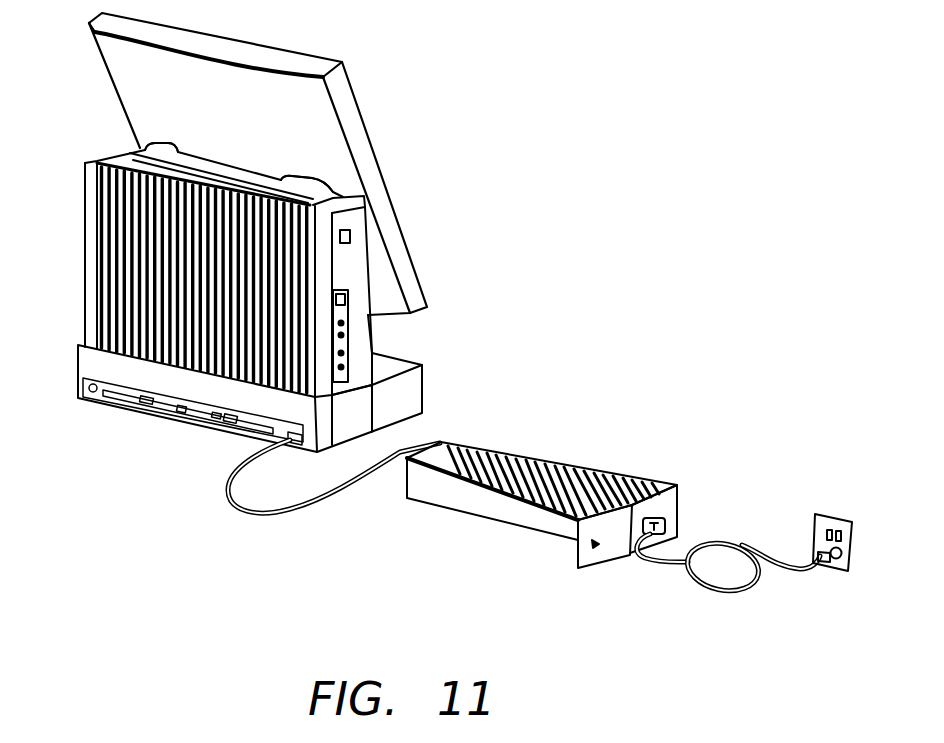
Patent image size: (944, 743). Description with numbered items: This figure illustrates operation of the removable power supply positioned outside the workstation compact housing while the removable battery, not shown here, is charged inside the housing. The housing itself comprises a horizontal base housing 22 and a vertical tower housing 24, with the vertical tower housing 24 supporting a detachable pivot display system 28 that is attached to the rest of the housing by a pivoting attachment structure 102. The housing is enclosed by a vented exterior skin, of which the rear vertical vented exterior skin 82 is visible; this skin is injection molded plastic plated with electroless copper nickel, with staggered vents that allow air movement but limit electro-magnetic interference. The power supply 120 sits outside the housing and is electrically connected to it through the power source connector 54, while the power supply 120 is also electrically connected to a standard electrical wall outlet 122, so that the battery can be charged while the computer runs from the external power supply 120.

The horizontal base housing 22 is at (293, 414).
The vertical tower housing 24 is at (253, 253).
The detachable pivot display system 28 is at (350, 130).
The power source connector 54 is at (300, 448).
The rear vertical vented exterior skin 82 is at (100, 202).
The pivoting attachment structure 102 is at (195, 165).
The power supply 120 is at (600, 477).
The electrical wall outlet 122 is at (853, 552).